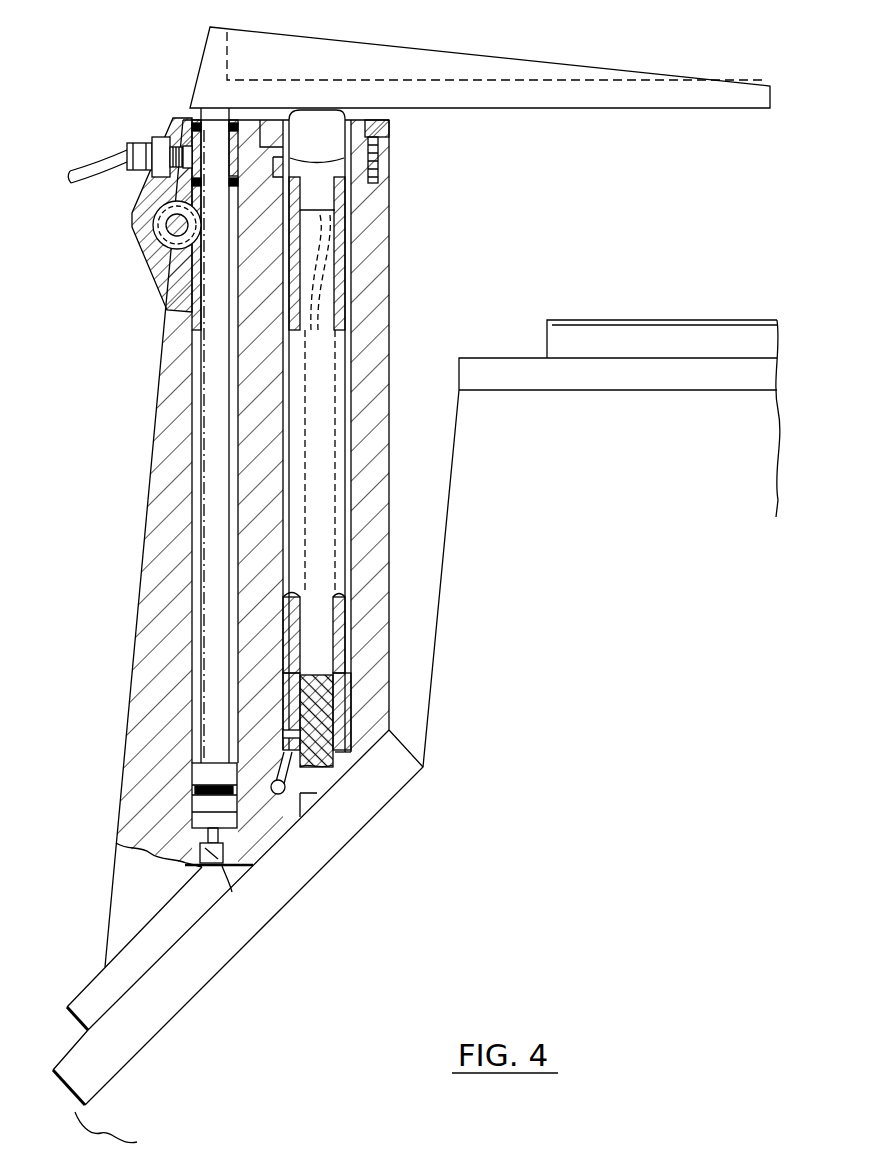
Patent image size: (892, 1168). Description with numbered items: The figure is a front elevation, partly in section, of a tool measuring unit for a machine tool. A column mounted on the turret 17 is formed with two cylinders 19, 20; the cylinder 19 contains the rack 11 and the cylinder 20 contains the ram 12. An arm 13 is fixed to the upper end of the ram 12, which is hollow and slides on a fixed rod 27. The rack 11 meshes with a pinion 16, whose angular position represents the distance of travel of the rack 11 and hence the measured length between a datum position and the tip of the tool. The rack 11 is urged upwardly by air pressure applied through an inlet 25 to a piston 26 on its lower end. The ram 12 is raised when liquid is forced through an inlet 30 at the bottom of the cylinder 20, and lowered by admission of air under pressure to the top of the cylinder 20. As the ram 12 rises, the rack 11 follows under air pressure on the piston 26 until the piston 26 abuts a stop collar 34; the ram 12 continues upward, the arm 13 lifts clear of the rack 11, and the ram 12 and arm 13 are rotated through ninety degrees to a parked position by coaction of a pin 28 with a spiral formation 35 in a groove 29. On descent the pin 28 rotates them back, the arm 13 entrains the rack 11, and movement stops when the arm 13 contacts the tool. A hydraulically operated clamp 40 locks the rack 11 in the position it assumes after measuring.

The rack 11 is at (217, 547).
The ram 12 is at (340, 380).
The arm 13 is at (568, 101).
The pinion 16 is at (168, 231).
The turret 17 is at (623, 464).
The cylinder 19 is at (200, 517).
The cylinder 20 is at (350, 433).
The inlet 25 is at (235, 870).
The piston 26 is at (200, 775).
The fixed rod 27 is at (327, 687).
The pin 28 is at (303, 745).
The groove 29 is at (305, 715).
The inlet 30 is at (303, 797).
The stop collar 34 is at (195, 313).
The spiral formation 35 is at (323, 250).
The hydraulically operated clamp 40 is at (190, 153).